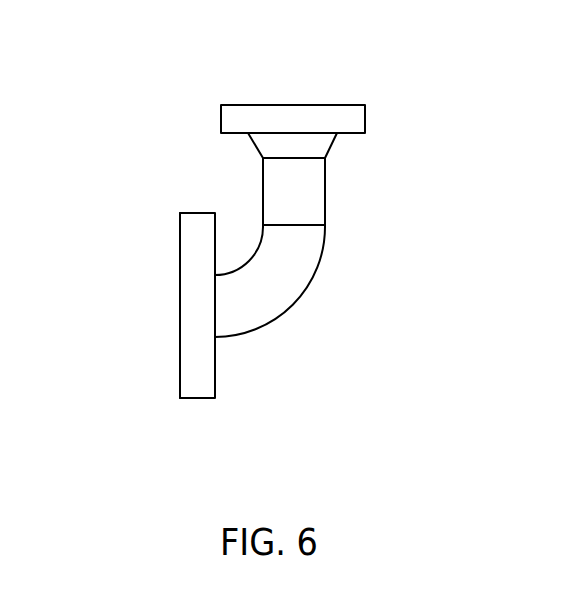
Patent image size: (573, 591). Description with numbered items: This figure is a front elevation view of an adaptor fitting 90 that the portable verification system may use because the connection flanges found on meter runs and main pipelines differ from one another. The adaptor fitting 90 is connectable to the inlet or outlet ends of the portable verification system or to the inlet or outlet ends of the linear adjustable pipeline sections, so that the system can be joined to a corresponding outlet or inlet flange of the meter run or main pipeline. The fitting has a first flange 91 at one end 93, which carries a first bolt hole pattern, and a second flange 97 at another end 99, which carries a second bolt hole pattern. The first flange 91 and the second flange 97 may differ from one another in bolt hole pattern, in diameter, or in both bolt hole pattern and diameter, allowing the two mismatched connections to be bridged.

The adaptor fitting 90 is at (122, 152).
The first flange 91 is at (195, 398).
The one end 93 is at (142, 310).
The second flange 97 is at (365, 113).
The another end 99 is at (283, 90).